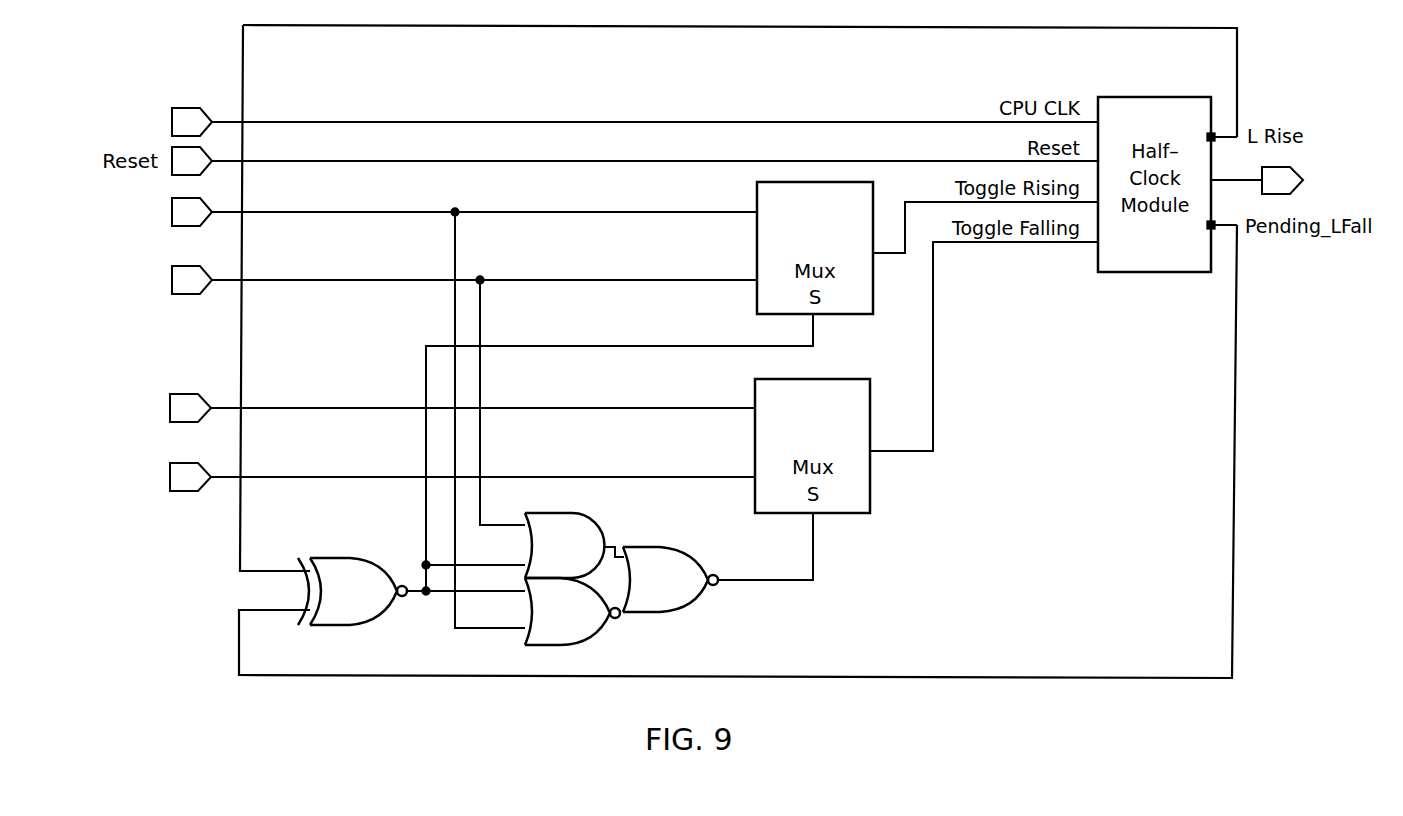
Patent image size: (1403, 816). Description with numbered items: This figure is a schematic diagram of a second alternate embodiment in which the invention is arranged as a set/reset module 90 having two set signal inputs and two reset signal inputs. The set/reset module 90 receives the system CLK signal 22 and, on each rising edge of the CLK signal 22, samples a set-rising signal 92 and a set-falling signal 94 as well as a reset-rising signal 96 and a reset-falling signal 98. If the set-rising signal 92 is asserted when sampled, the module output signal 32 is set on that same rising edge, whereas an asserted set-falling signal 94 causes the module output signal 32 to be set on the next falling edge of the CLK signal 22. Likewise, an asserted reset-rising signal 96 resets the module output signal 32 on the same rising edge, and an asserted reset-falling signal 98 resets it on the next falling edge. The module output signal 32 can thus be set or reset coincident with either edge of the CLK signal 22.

The CLK signal 22 is at (180, 102).
The module output signal 32 is at (1350, 180).
The set/reset module 90 is at (443, 720).
The set-rising signal 92 is at (87, 296).
The set-falling signal 94 is at (82, 492).
The reset-rising signal 96 is at (87, 226).
The reset-falling signal 98 is at (83, 422).